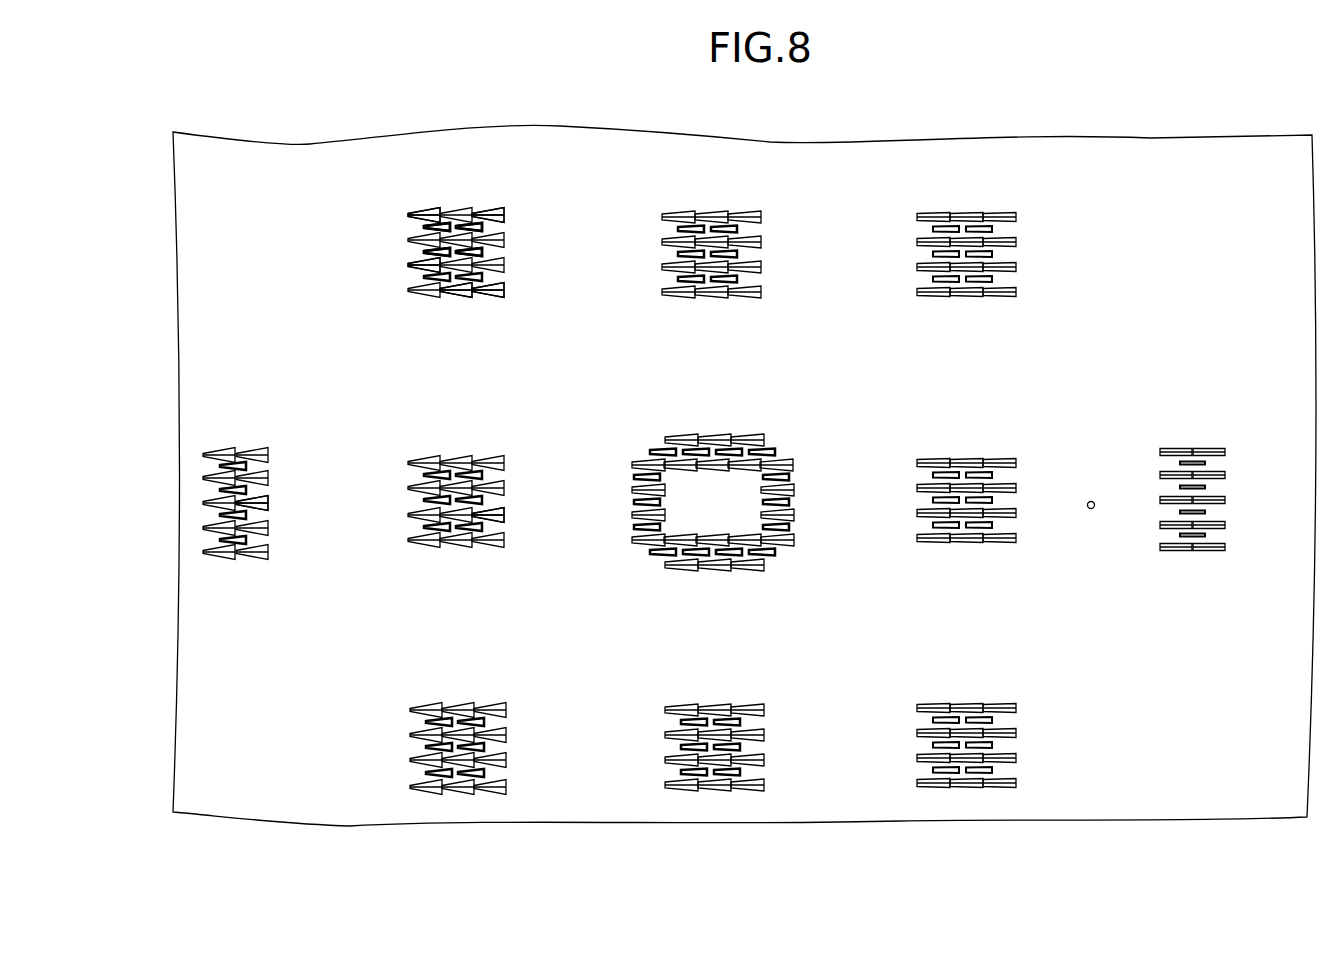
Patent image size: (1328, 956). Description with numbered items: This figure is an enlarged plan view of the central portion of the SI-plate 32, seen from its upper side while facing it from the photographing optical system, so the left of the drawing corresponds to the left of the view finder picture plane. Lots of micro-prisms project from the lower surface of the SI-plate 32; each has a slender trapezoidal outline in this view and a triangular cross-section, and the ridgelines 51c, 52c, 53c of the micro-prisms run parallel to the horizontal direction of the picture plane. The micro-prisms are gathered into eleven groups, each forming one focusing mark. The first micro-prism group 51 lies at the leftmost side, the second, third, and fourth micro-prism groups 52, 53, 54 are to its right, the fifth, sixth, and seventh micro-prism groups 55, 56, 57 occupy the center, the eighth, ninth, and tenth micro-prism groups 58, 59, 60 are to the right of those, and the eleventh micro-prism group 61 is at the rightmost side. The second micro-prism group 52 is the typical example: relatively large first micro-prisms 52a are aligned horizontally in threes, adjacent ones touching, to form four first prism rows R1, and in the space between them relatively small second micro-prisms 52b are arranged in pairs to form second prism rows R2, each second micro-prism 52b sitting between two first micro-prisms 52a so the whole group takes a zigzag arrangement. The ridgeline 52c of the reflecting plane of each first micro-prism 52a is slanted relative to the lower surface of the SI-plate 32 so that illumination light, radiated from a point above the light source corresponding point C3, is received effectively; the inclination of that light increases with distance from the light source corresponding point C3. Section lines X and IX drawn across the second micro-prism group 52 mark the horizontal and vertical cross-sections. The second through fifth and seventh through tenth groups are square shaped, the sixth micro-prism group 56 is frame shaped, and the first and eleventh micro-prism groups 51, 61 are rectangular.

The SI-plate 32 is at (1182, 150).
The first micro-prism group 51 is at (283, 443).
The ridgeline of micro-prism 51c is at (262, 500).
The second micro-prism group 52 is at (517, 295).
The first micro-prism 52a is at (457, 208).
The second micro-prism 52b is at (443, 298).
The ridgeline of reflecting plane 52c is at (507, 303).
The third micro-prism group 53 is at (525, 448).
The ridgeline of micro-prism 53c is at (500, 510).
The fourth micro-prism group 54 is at (525, 695).
The fifth micro-prism group 55 is at (788, 210).
The sixth micro-prism group 56 is at (790, 432).
The seventh micro-prism group 57 is at (790, 695).
The eighth micro-prism group 58 is at (1035, 210).
The ninth micro-prism group 59 is at (1036, 452).
The tenth micro-prism group 60 is at (1036, 695).
The eleventh micro-prism group 61 is at (1243, 432).
The light source corresponding point C3 is at (1094, 502).
The first prism row R1 is at (402, 243).
The second prism row R2 is at (506, 252).
The section line X- X is at (580, 218).
The section line IX- IX is at (497, 333).